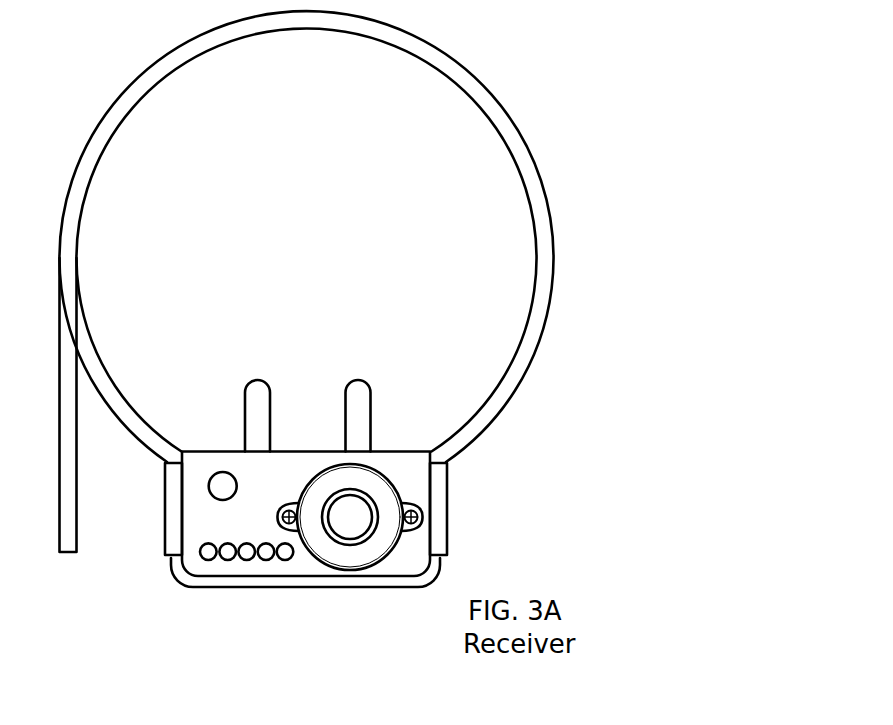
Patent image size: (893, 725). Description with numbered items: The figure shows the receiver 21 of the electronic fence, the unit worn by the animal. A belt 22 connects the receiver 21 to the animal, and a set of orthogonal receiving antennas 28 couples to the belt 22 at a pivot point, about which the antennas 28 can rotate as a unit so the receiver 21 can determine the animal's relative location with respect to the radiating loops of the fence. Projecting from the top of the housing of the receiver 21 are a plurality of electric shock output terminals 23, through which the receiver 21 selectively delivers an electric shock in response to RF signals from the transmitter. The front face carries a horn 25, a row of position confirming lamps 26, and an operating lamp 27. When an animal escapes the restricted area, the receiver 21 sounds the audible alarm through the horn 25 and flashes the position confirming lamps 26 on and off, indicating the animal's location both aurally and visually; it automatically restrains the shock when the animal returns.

The receiver 21 is at (228, 588).
The belt 22 is at (482, 80).
The electric shock output terminals 23 is at (358, 380).
The horn 25 is at (322, 566).
The position confirming lamps 26 is at (250, 562).
The operating lamp 27 is at (207, 489).
The orthogonal receiving antennas 28 is at (60, 485).